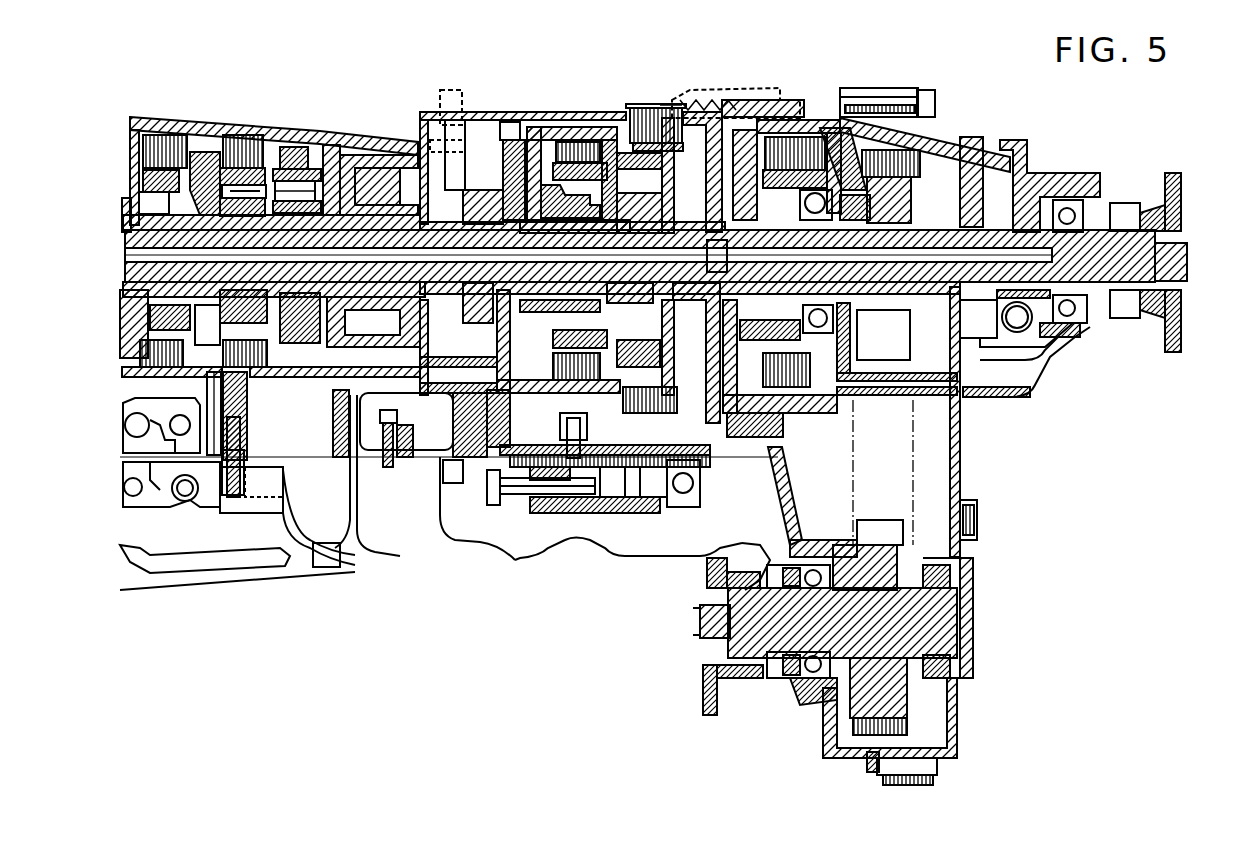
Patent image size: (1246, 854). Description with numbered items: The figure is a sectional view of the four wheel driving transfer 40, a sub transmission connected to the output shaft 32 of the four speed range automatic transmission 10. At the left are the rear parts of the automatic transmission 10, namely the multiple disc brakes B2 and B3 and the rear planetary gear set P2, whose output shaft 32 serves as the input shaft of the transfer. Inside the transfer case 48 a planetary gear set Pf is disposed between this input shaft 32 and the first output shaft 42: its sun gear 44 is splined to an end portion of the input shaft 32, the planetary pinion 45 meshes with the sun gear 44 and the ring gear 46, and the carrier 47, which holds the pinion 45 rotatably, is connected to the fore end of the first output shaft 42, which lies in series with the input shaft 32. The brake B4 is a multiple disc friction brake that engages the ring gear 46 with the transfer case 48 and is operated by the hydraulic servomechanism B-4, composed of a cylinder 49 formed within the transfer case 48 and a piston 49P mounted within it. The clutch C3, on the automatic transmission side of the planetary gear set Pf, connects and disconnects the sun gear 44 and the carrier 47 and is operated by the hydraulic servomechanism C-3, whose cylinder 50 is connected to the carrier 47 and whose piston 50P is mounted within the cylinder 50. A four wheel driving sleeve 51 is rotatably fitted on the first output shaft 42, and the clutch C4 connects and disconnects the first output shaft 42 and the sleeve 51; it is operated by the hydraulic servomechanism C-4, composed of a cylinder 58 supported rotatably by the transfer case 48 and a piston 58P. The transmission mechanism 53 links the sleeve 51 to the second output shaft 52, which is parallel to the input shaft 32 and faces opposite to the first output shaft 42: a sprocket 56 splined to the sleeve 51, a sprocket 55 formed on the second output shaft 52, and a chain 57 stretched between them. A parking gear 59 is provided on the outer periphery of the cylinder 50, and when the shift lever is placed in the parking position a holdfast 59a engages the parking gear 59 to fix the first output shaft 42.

The four speed range automatic transmission 10 is at (288, 423).
The output shaft 32 is at (133, 252).
The four wheel driving transfer 40 is at (486, 106).
The first output shaft 42 is at (1170, 284).
The sun gear 44 is at (600, 500).
The planetary pinion 45 is at (622, 470).
The ring gear 46 is at (650, 450).
The carrier 47 is at (710, 440).
The transfer case 48 is at (533, 125).
The cylinder 49 is at (725, 130).
The piston 49P is at (705, 125).
The cylinder 50 is at (510, 122).
The piston 50P is at (572, 125).
The four wheel driving sleeve 51 is at (895, 330).
The second output shaft 52 is at (950, 610).
The transmission mechanism 53 is at (985, 125).
The sprocket 55 is at (970, 540).
The sprocket 56 is at (905, 350).
The chain 57 is at (920, 400).
The cylinder 58 is at (770, 175).
The piston 58P is at (940, 120).
The parking gear 59 is at (512, 420).
The holdfast 59a is at (556, 445).
The multiple disc brake B2 is at (173, 130).
The multiple disc brake B3 is at (234, 130).
The brake B4 is at (648, 108).
The hydraulic servomechanism B-4 is at (770, 130).
The clutch C3 is at (614, 130).
The hydraulic servomechanism C-3 is at (560, 142).
The clutch C4 is at (830, 120).
The hydraulic servomechanism C-4 is at (825, 120).
The rear planetary gear set P2 is at (314, 154).
The planetary gear set Pf is at (652, 188).